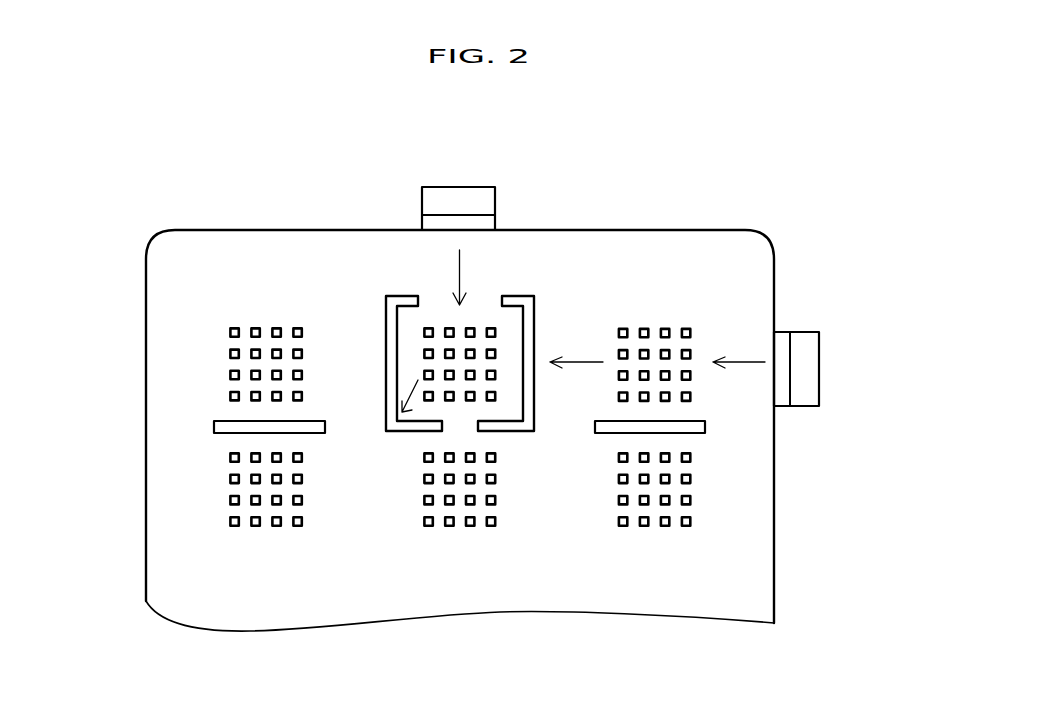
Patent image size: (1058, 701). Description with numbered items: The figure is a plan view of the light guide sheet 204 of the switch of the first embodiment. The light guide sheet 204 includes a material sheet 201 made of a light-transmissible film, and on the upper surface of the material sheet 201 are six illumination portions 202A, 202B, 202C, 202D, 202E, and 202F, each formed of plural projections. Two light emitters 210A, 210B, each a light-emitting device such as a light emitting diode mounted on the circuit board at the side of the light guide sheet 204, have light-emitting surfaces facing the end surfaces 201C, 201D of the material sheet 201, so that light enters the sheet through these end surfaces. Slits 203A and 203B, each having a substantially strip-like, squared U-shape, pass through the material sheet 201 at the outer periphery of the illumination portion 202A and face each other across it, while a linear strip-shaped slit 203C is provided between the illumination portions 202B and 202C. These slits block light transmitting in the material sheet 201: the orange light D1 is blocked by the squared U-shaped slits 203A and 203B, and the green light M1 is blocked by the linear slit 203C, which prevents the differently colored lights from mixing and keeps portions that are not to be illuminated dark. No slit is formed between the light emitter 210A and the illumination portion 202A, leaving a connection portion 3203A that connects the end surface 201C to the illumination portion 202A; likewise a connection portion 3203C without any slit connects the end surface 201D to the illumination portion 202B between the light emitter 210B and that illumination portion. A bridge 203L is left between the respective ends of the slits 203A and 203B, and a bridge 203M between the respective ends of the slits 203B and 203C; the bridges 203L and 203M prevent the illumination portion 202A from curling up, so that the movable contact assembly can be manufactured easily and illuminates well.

The material sheet 201 is at (162, 583).
The end surface 201C is at (460, 230).
The end surface 201D is at (774, 380).
The illumination portion 202A is at (468, 345).
The illumination portion 202B is at (652, 345).
The illumination portion 202C is at (650, 488).
The illumination portion 202D is at (465, 483).
The illumination portion 202E is at (268, 495).
The illumination portion 202F is at (240, 355).
The slit 203A is at (390, 340).
The slit 203B is at (528, 353).
The slit 203C is at (688, 425).
The bridge 203L is at (450, 422).
The bridge 203M is at (578, 425).
The light guide sheet 204 is at (172, 255).
The light emitter 210A is at (437, 200).
The light emitter 210B is at (800, 348).
The connection portion 3203A is at (438, 303).
The connection portion 3203C is at (717, 345).
The orange light D1 is at (461, 282).
The green light M1 is at (572, 362).